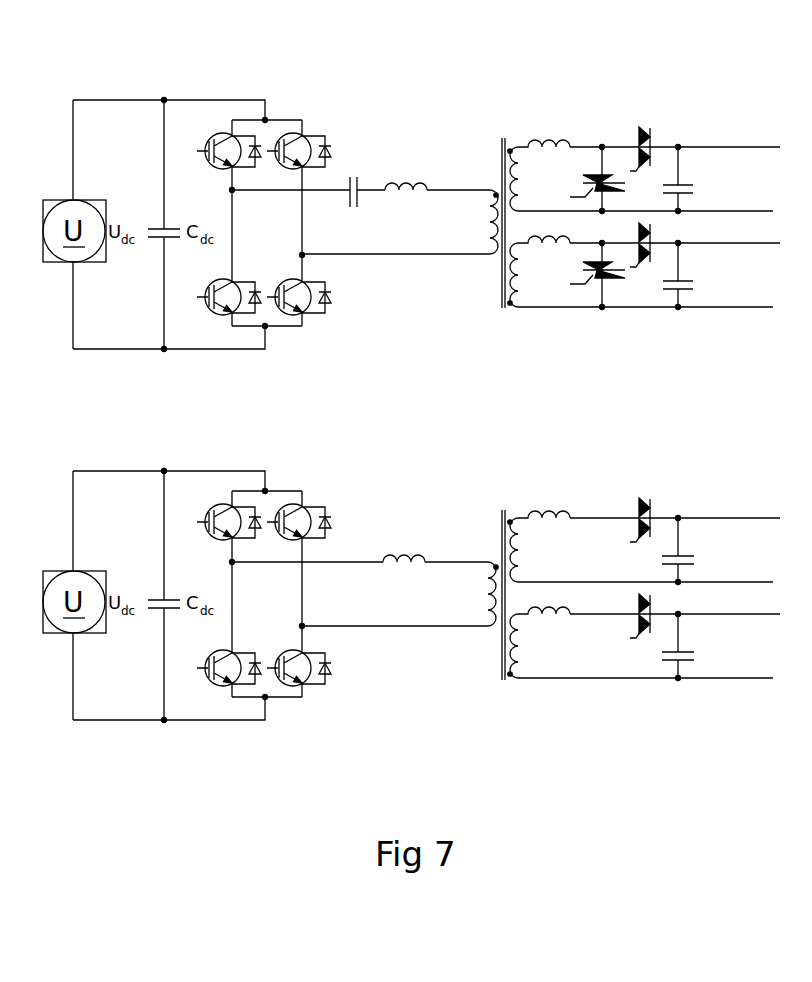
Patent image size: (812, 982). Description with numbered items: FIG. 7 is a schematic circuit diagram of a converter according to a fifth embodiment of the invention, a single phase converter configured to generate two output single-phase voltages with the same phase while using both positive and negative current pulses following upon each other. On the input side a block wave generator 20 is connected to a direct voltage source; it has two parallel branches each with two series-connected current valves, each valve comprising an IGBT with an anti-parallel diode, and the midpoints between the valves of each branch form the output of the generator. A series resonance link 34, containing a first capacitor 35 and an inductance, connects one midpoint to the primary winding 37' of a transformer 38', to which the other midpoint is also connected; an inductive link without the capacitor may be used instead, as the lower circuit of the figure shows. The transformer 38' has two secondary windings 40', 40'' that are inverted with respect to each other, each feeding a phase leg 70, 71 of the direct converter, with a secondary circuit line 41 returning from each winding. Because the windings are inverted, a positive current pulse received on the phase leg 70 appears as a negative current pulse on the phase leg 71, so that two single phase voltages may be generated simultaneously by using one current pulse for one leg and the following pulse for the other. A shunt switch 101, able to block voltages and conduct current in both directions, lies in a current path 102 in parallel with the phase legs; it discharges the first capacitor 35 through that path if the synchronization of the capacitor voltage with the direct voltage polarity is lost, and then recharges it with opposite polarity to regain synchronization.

The block wave generator 20 is at (302, 326).
The series resonance link 34 is at (407, 243).
The first capacitor 35 is at (357, 170).
The primary winding 37' is at (475, 445).
The transformer 38' is at (490, 370).
The secondary winding 40' is at (544, 324).
The secondary winding 40'' is at (544, 487).
The secondary circuit line 41 is at (578, 308).
The phase leg 70 is at (657, 145).
The phase leg 71 is at (657, 241).
The shunt switch 101 is at (607, 182).
The current path 102 is at (608, 143).